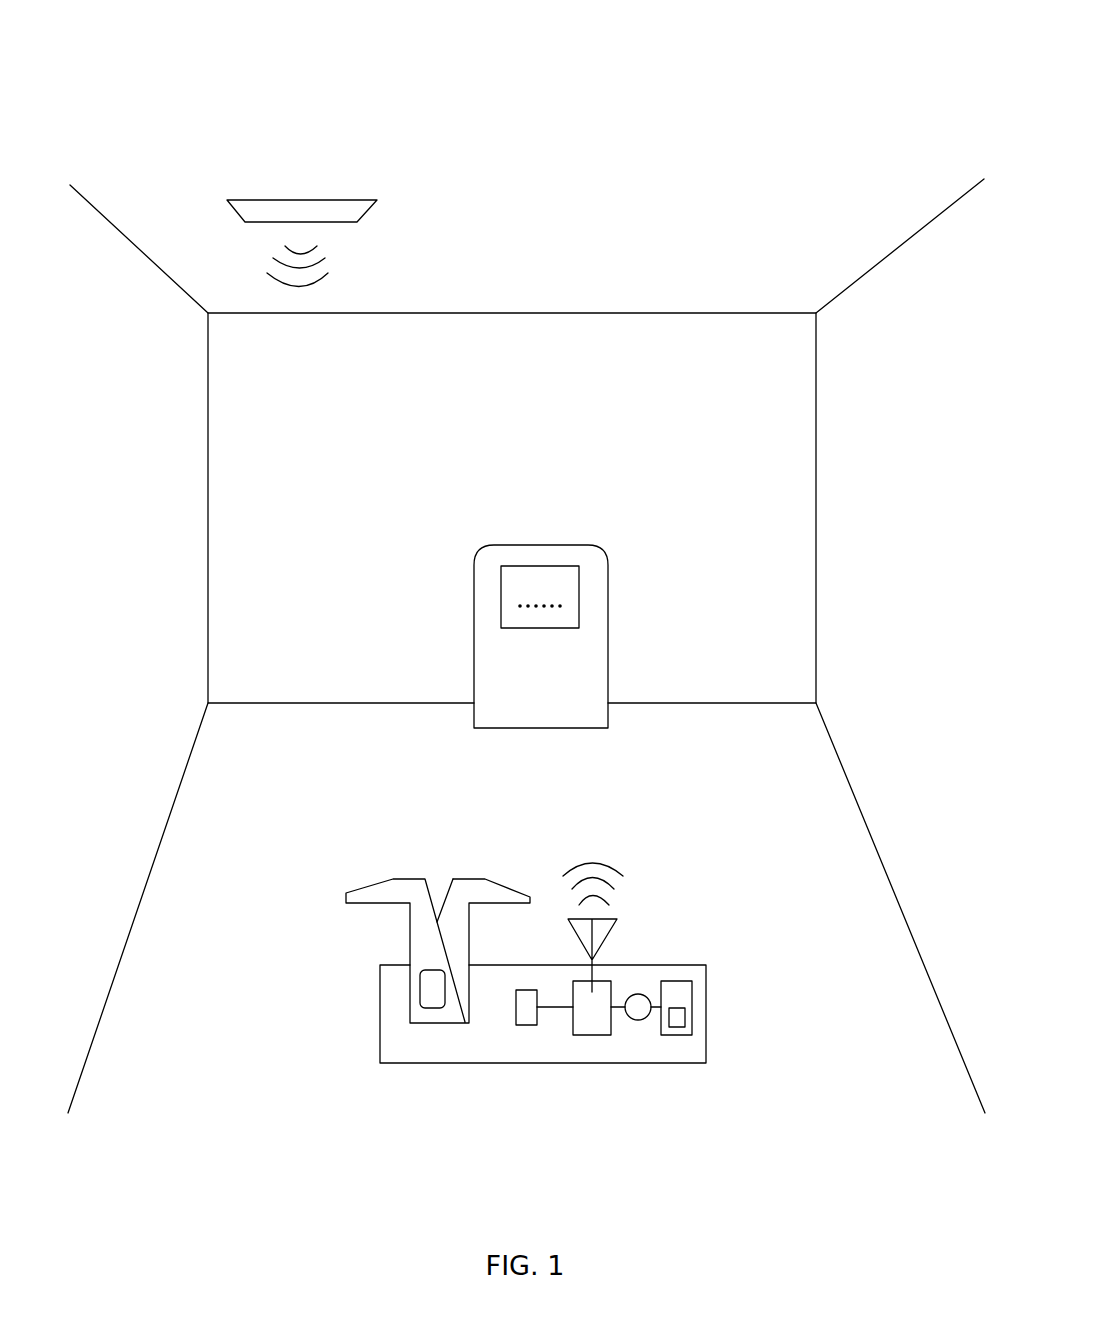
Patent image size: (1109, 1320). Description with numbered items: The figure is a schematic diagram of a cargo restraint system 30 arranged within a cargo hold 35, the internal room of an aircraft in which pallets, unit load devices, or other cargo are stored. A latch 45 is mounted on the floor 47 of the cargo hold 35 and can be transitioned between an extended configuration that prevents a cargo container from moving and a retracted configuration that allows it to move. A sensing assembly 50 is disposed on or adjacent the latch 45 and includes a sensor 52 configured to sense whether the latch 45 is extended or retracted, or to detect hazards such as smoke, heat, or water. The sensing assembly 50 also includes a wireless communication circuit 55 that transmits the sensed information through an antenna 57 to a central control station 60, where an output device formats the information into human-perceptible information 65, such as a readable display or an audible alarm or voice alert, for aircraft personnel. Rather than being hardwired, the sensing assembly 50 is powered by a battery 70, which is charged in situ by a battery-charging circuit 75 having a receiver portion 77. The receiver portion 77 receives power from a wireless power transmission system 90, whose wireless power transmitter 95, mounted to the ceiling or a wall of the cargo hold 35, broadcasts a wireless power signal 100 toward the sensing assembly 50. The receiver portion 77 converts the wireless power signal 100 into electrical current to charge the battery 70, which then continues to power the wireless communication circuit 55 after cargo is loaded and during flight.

The cargo restraint system 30 is at (696, 80).
The cargo hold 35 is at (711, 373).
The floor 47 is at (247, 1032).
The wireless power transmission system 90 is at (369, 102).
The wireless power transmitter 95 is at (310, 213).
The wireless power signal 100 is at (377, 260).
The control station 60 is at (583, 663).
The human-perceptible information 65 is at (535, 579).
The sensing assembly 50 is at (577, 810).
The latch 45 is at (407, 890).
The sensor 52 is at (432, 990).
The wireless communication circuit 55 is at (590, 1022).
The antenna 57 is at (598, 935).
The battery 70 is at (640, 1010).
The battery-charging circuit 75 is at (675, 995).
The receiver portion 77 is at (678, 1020).